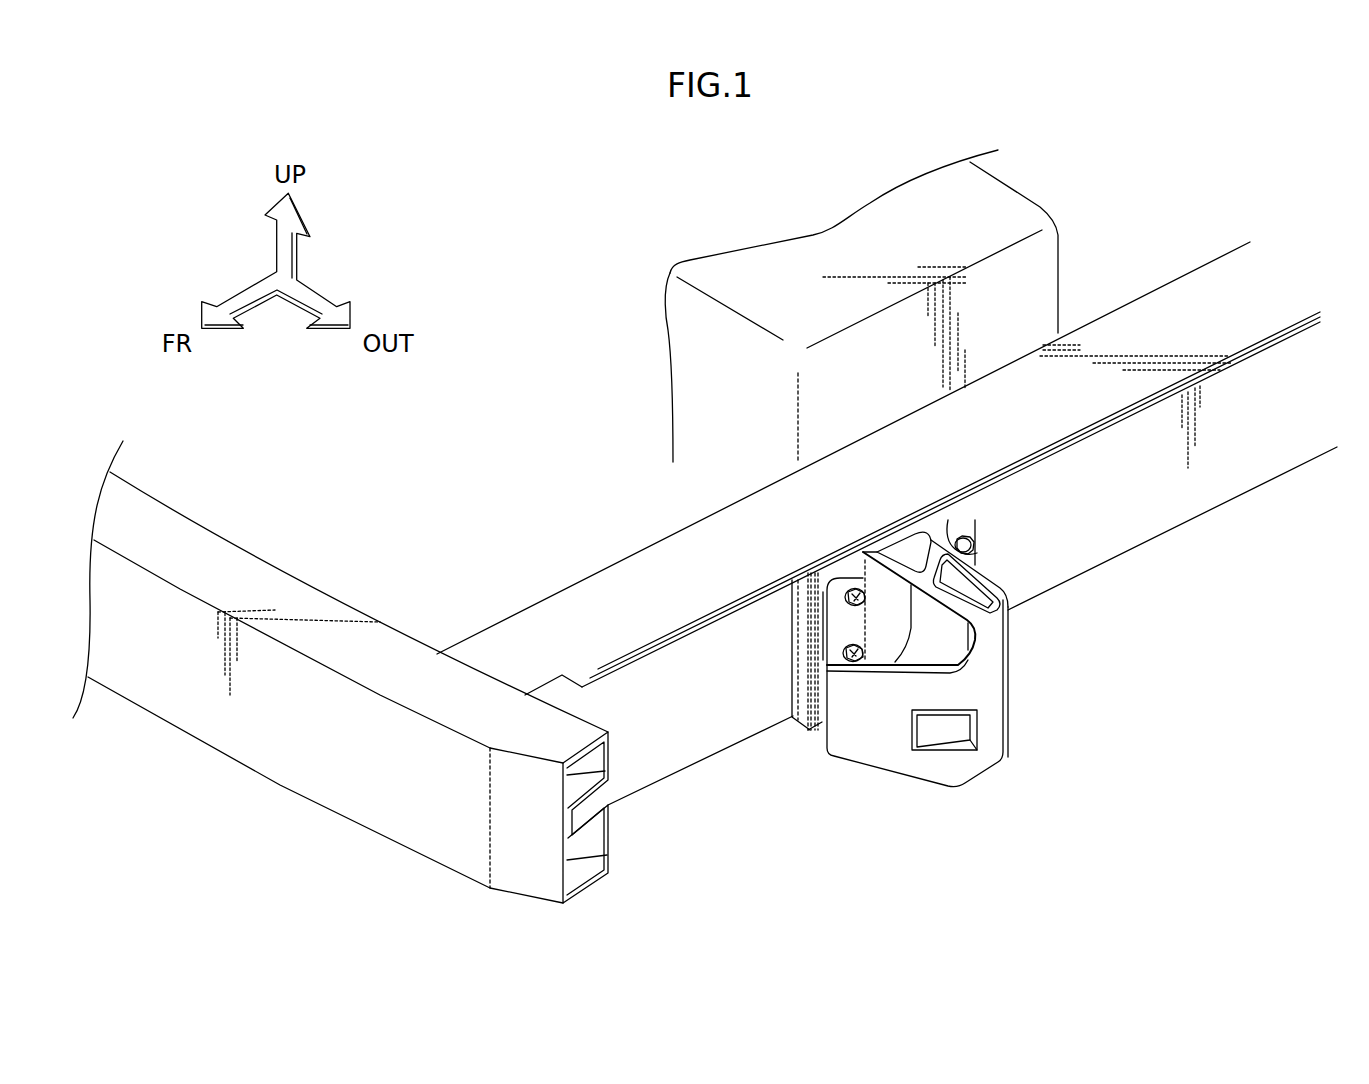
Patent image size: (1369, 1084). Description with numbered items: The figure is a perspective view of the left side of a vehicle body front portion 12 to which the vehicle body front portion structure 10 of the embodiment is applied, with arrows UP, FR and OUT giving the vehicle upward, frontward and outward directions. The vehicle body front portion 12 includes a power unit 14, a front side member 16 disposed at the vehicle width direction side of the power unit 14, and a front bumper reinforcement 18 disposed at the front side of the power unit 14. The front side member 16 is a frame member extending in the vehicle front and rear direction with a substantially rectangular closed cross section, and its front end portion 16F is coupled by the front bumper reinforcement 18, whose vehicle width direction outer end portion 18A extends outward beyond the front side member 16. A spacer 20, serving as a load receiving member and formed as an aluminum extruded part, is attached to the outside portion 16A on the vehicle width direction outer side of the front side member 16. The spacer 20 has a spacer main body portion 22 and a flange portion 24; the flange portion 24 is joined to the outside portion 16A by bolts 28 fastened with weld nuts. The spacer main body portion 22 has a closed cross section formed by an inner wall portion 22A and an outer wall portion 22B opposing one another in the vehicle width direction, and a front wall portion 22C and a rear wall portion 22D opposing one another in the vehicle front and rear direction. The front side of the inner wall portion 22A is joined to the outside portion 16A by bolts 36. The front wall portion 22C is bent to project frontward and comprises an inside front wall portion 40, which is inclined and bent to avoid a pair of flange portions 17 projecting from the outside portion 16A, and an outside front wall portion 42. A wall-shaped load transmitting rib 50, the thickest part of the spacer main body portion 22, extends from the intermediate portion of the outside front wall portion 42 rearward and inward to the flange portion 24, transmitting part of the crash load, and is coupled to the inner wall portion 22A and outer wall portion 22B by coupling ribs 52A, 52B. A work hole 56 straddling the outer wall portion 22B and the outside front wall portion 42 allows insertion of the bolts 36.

The vehicle body front portion structure 10 is at (545, 247).
The vehicle body front portion 12 is at (612, 300).
The power unit 14 is at (1005, 180).
The front side member 16 is at (1143, 503).
The outside portion 16A is at (1115, 540).
The front end portion 16F is at (509, 636).
The flange portion 17 is at (802, 687).
The front bumper reinforcement 18 is at (253, 730).
The vehicle width direction outer end portion 18A is at (528, 867).
The spacer 20 is at (967, 818).
The spacer main body portion 22 is at (1010, 715).
The inner wall portion 22A is at (913, 543).
The outer wall portion 22B is at (990, 683).
The front wall portion 22C is at (772, 838).
The rear wall portion 22D is at (1000, 580).
The flange portion 24 is at (963, 518).
The bolt 28 is at (972, 548).
The bolt 36 is at (850, 588).
The inside front wall portion 40 is at (813, 723).
The outside front wall portion 42 is at (860, 745).
The load transmitting rib 50 is at (927, 645).
The coupling rib 52A is at (883, 583).
The coupling rib 52B is at (960, 575).
The work hole 56 is at (963, 740).